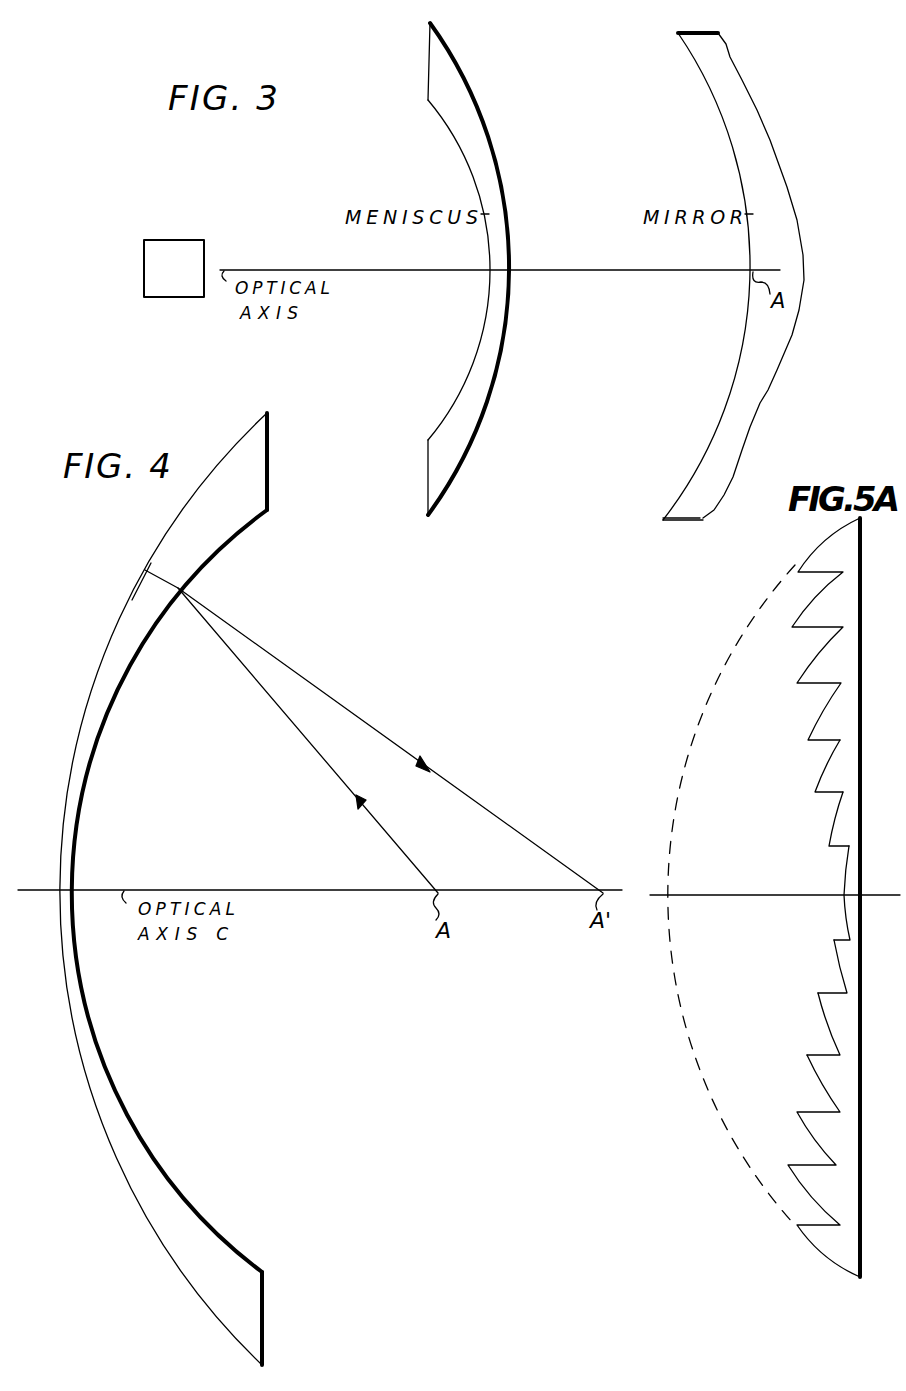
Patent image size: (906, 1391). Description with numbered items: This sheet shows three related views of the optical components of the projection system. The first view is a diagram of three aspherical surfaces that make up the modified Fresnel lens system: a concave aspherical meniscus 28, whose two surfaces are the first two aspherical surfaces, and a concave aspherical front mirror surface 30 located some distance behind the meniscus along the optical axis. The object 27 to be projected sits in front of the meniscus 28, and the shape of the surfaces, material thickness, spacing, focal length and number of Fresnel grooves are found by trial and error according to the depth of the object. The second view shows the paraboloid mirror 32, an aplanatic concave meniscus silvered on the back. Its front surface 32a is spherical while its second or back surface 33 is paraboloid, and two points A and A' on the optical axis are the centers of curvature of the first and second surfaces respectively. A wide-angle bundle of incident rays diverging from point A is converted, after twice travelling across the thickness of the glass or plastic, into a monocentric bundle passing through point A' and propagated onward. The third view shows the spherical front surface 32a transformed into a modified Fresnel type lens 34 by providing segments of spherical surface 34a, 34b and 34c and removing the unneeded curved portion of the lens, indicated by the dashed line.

In FIG. 3, the object 27 is at (170, 250).
In FIG. 3, the concave aspherical meniscus 28 is at (455, 88).
In FIG. 3, the concave aspherical front mirror surface 30 is at (728, 409).
In FIG. 4, the paraboloid mirror 32 is at (163, 889).
In FIG. 4, the front surface 32a is at (98, 733).
In FIG. 4, the back surface 33 is at (116, 632).
In FIG. 5A, the modified Fresnel type lens 34 is at (764, 897).
In FIG. 5A, the segment of spherical surface 34a is at (843, 866).
In FIG. 5A, the segment of spherical surface 34b is at (832, 820).
In FIG. 5A, the segment of spherical surface 34c is at (820, 767).